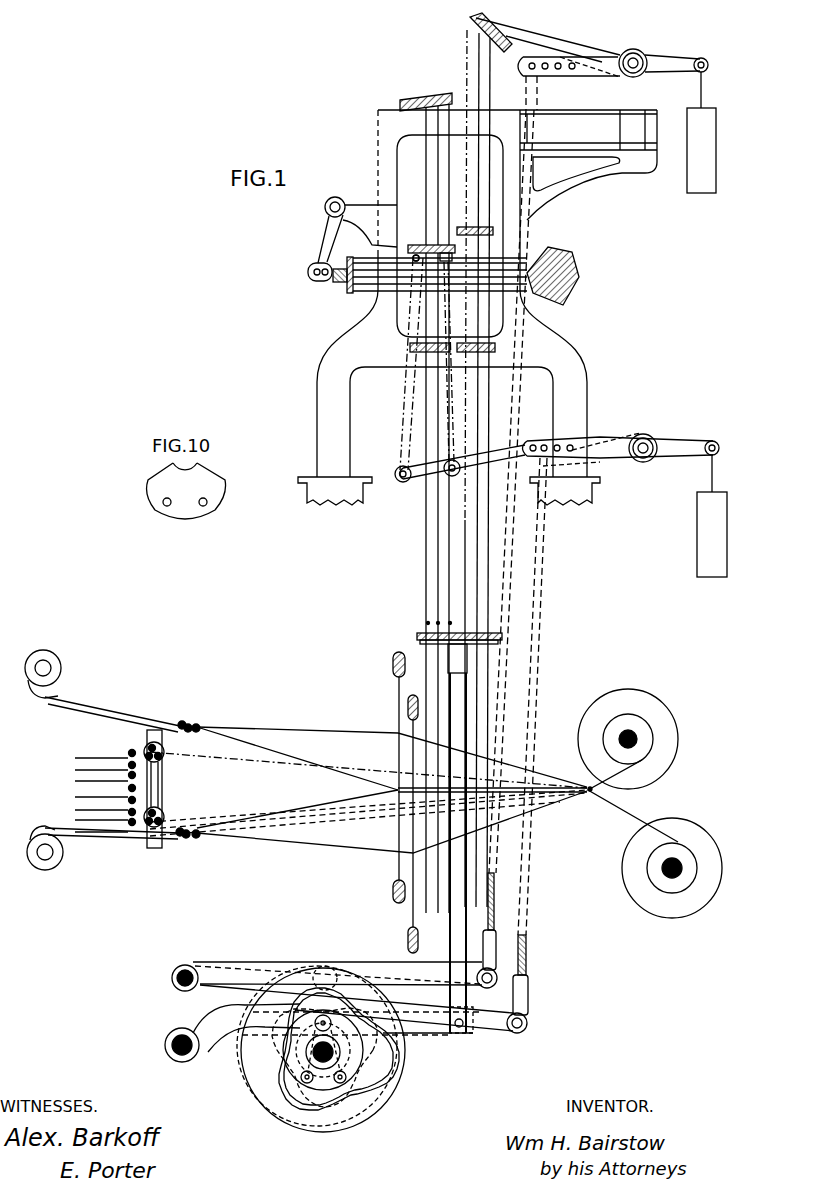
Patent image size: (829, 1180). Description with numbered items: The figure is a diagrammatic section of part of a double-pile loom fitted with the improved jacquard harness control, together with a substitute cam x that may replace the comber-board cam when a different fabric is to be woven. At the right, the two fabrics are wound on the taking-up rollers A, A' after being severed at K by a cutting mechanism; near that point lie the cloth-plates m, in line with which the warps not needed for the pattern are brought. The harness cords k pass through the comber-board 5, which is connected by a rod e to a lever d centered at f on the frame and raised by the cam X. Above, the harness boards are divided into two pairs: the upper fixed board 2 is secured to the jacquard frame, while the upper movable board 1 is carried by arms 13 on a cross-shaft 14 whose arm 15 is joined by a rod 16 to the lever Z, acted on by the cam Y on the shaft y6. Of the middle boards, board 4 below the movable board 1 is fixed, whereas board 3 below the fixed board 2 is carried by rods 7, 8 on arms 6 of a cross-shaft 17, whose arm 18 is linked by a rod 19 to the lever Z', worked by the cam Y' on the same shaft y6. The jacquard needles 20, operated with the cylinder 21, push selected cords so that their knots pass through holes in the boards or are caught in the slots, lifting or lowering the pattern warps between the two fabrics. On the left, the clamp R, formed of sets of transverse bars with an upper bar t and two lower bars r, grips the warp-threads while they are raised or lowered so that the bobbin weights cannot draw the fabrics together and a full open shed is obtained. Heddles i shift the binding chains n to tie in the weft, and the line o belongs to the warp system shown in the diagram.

In FIG. 1, the upper movable board 1 is at (483, 460).
In FIG. 1, the upper fixed board 2 is at (426, 162).
In FIG. 1, the movable middle board 3 is at (428, 570).
In FIG. 1, the fixed middle board 4 is at (477, 221).
In FIG. 1, the comber-board 5 is at (418, 635).
In FIG. 1, the levers or arms 6 is at (460, 462).
In FIG. 1, the rod 7 is at (408, 364).
In FIG. 1, the rod 8 is at (456, 362).
In FIG. 1, the arms 13 is at (548, 40).
In FIG. 1, the cross-shaft 14 is at (636, 60).
In FIG. 1, the arm 15 is at (617, 124).
In FIG. 1, the rod 16 is at (518, 523).
In FIG. 1, the cross-shaft 17 is at (644, 442).
In FIG. 1, the arm 18 is at (625, 505).
In FIG. 1, the rod 19 is at (539, 736).
In FIG. 1, the needles 20 is at (410, 279).
In FIG. 1, the Jacquard cylinder 21 is at (564, 276).
In FIG. 1, the harness cords k is at (470, 568).
In FIG. 1, the bar or rod e is at (457, 838).
In FIG. 1, the lever d is at (425, 1035).
In FIG. 1, the heddles i is at (392, 697).
In FIG. 1, the clamp R is at (161, 789).
In FIG. 1, the lower clamping bars r is at (163, 751).
In FIG. 1, the upper clamping bar t is at (145, 747).
In FIG. 1, the chains n is at (368, 753).
In FIG. 1, the lower warp line o is at (368, 822).
In FIG. 1, the cloth-plates m is at (585, 795).
In FIG. 1, the cutting mechanism location K is at (633, 801).
In FIG. 1, the taking-up roller A' is at (632, 739).
In FIG. 1, the taking-up roller A is at (672, 867).
In FIG. 1, the lever Z is at (334, 971).
In FIG. 1, the lever Z' is at (363, 1010).
In FIG. 1, the pivot center f is at (170, 1058).
In FIG. 1, the cam Y is at (323, 1050).
In FIG. 1, the cam Y' is at (323, 1080).
In FIG. 1, the cam X is at (270, 1100).
In FIG. 1, the shaft y6 is at (351, 1044).
In FIG. 10, the substitute cam x is at (183, 518).